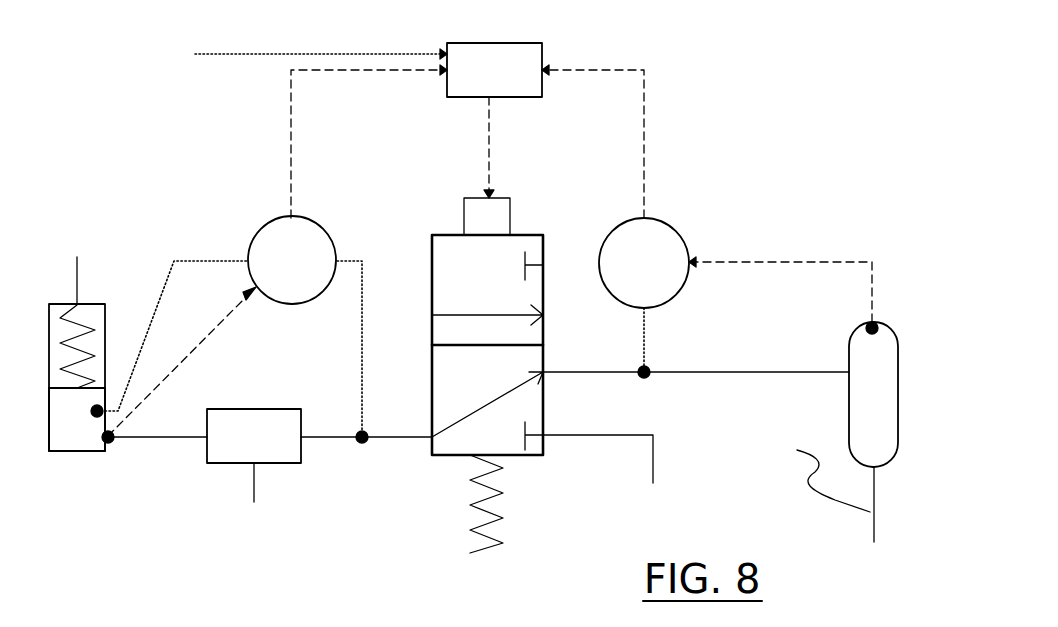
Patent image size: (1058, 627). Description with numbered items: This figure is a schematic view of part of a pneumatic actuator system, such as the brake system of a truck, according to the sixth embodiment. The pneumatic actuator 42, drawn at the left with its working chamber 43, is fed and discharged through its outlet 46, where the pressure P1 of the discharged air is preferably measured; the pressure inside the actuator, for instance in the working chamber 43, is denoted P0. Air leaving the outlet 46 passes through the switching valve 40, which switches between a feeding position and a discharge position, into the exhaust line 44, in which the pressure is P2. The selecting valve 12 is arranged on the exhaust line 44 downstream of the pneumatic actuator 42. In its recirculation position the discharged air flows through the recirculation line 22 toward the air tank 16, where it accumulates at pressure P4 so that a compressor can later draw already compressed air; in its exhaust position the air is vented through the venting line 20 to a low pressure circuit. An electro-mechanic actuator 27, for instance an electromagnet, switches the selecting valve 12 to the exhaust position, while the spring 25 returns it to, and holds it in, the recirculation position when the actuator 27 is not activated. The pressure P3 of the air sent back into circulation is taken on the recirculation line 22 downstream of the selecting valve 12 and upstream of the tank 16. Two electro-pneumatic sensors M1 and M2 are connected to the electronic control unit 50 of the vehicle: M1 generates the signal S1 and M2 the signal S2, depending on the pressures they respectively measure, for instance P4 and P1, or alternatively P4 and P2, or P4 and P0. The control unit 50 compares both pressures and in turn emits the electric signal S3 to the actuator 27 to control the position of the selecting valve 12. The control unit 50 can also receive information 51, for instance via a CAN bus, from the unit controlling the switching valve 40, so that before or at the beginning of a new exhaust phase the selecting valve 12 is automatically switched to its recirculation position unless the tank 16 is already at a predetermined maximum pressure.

The selecting valve 12 is at (413, 233).
The air tank 16 is at (873, 432).
The venting line 20 is at (607, 475).
The recirculation line 22 is at (770, 373).
The spring 25 is at (505, 494).
The electro-mechanic actuator 27 is at (505, 210).
The switching valve 40 is at (254, 455).
The pneumatic actuator 42 is at (113, 315).
The working chamber 43 is at (73, 452).
The exhaust line 44 is at (340, 441).
The outlet 46 is at (109, 443).
The electronic control unit 50 is at (494, 70).
The information 51 is at (242, 50).
The signal S1 is at (610, 141).
The signal S2 is at (347, 141).
The electric signal S3 is at (503, 147).
The pressure in the pneumatic actuator P0 is at (152, 341).
The pressure of the discharged air P1 is at (125, 451).
The pressure in the exhaust line P2 is at (346, 352).
The pressure of the recirculated air P3 is at (660, 343).
The pressure in the air tank P4 is at (884, 317).
The electro-pneumatic sensor M1 is at (644, 263).
The electro-pneumatic sensor M2 is at (292, 260).